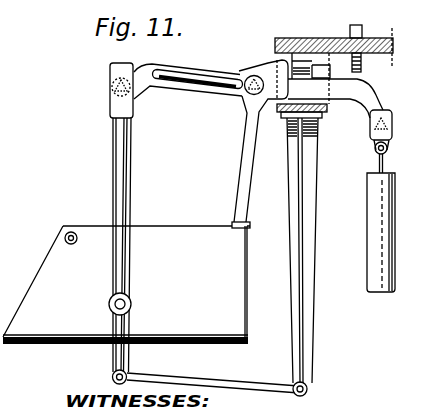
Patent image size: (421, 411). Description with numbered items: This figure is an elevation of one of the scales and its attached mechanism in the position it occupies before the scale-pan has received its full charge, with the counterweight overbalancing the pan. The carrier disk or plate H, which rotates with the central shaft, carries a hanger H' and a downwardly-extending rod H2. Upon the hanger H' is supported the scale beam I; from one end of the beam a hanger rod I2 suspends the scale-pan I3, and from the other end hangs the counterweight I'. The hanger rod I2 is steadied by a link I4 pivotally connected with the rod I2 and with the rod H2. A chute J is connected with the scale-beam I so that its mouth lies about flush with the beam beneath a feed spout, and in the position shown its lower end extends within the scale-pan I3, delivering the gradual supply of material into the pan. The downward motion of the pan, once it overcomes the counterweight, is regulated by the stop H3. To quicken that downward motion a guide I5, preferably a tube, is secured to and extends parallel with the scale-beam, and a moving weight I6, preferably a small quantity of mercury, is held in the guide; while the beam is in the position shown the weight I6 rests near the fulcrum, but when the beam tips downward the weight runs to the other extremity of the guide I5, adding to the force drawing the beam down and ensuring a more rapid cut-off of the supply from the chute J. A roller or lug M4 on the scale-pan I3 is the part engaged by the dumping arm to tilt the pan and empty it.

The carrier disk or plate H is at (334, 42).
The hanger H' is at (285, 78).
The stop H3 is at (364, 58).
The downwardly-extending rod H2 is at (313, 162).
The scale beam I is at (340, 126).
The counterweight I' is at (370, 232).
The hanger rod I2 is at (130, 181).
The scale-pan I3 is at (126, 285).
The link I4 is at (248, 387).
The guide I5 is at (188, 86).
The moving weight I6 is at (225, 97).
The chute J is at (239, 190).
The roller or lug M4 is at (89, 251).